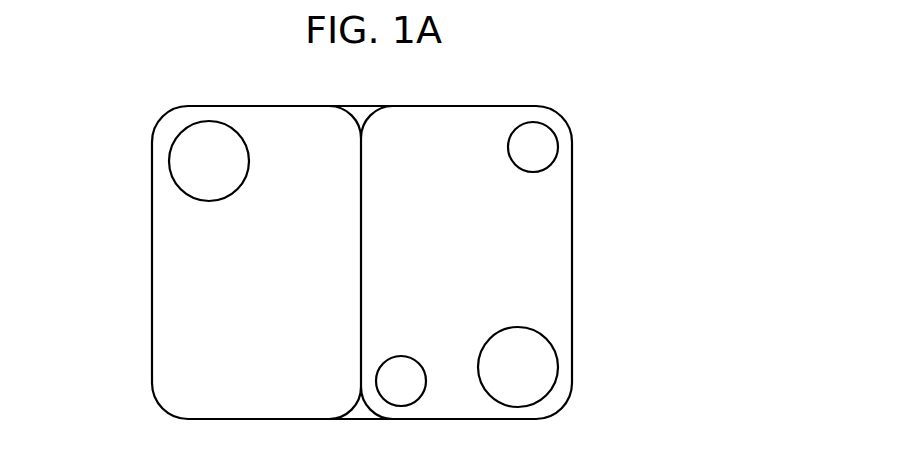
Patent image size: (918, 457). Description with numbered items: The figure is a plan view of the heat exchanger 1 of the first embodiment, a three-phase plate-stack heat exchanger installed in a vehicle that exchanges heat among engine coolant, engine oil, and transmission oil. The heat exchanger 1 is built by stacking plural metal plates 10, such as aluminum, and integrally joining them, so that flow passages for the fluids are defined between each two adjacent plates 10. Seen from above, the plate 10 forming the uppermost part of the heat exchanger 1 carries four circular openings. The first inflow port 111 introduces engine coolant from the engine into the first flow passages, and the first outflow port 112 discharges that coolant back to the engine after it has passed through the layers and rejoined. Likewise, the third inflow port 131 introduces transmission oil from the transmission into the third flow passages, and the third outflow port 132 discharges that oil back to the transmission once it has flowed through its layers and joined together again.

The heat exchanger 1 is at (623, 101).
The plate 10 is at (362, 117).
The first inflow port 111 is at (545, 375).
The first outflow port 112 is at (179, 181).
The third inflow port 131 is at (393, 398).
The third outflow port 132 is at (548, 147).